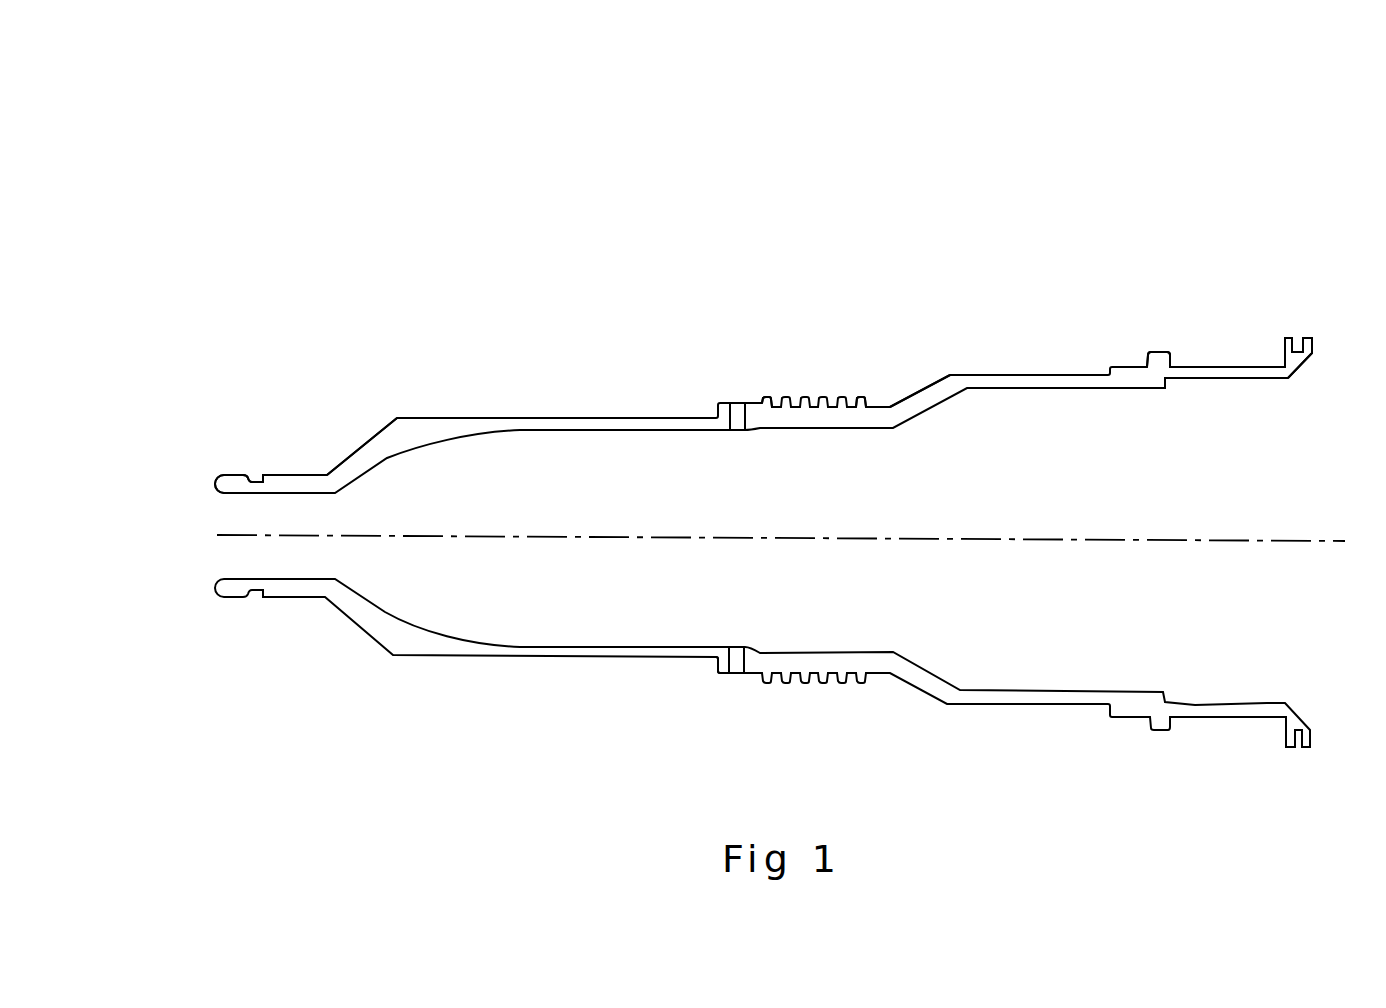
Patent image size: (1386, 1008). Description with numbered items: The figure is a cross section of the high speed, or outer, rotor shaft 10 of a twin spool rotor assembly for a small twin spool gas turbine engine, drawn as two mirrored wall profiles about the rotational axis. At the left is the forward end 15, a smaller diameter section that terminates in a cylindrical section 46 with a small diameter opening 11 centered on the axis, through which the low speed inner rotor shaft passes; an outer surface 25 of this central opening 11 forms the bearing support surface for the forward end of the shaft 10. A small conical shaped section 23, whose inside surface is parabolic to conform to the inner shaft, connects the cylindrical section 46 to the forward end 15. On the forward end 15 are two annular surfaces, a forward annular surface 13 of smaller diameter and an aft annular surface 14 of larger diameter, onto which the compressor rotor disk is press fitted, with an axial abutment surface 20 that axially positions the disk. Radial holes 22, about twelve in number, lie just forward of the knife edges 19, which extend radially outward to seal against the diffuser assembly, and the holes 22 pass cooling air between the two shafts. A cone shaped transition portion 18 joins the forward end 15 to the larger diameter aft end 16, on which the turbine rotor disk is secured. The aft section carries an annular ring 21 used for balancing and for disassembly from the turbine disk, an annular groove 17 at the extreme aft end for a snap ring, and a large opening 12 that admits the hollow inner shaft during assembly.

The outer rotor shaft 10 is at (485, 185).
The small diameter opening 11 is at (237, 492).
The large opening 12 is at (1228, 378).
The forward annular surface 13 is at (425, 418).
The aft annular surface 14 is at (682, 419).
The forward end 15 is at (553, 419).
The aft end 16 is at (1032, 375).
The annular groove 17 is at (1303, 342).
The cone shaped transition portion 18 is at (928, 385).
The knife edges 19 is at (822, 400).
The axial abutment surface 20 is at (716, 661).
The annular ring 21 is at (1163, 350).
The radial holes 22 is at (738, 403).
The small conical shaped section 23 is at (355, 452).
The outer surface 25 is at (273, 473).
The cylindrical section 46 is at (233, 482).